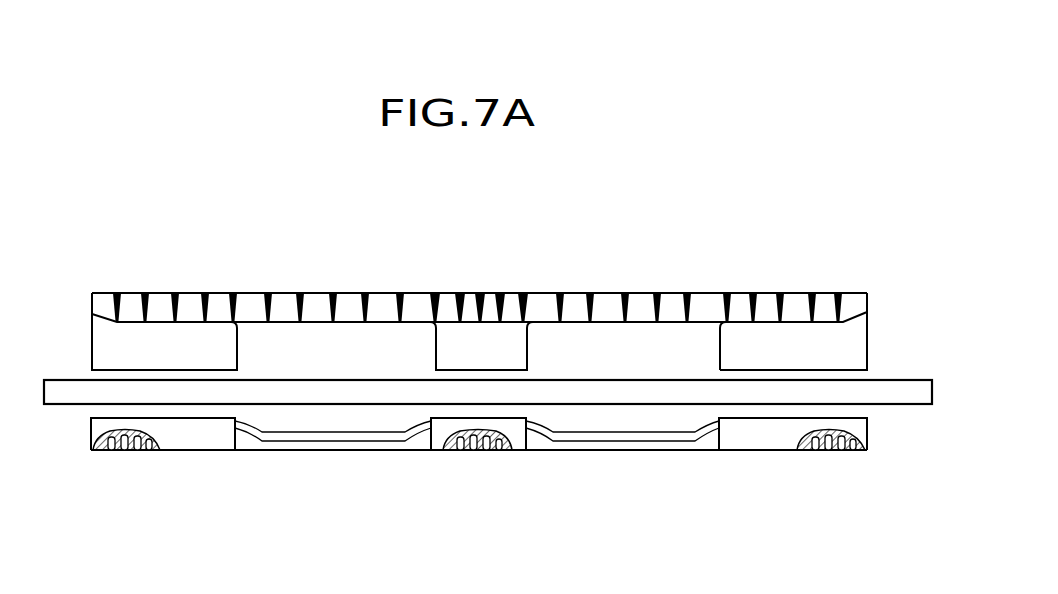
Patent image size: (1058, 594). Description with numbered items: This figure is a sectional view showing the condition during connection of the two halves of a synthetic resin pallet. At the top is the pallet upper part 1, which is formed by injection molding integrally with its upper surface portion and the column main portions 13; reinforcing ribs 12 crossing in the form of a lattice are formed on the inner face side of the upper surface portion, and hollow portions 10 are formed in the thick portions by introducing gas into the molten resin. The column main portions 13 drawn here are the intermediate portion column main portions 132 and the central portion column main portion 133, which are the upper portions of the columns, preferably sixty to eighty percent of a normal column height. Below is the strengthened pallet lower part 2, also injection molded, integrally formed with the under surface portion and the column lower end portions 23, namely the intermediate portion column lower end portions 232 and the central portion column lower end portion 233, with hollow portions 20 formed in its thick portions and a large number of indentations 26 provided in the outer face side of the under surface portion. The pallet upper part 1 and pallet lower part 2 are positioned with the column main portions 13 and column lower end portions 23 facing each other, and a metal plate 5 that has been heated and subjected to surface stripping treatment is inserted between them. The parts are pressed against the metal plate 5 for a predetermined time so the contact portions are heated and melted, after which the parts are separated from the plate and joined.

The pallet upper part 1 is at (497, 276).
The pallet lower part 2 is at (868, 450).
The metal plate 5 is at (58, 405).
The hollow portions 10 is at (523, 313).
The reinforcing ribs 12 is at (160, 309).
The column main portions 13 is at (512, 277).
The intermediate portion column main portions 132 is at (130, 347).
The central portion column main portion 133 is at (462, 343).
The hollow portions 20 is at (493, 508).
The column lower end portions 23 is at (479, 484).
The intermediate portion column lower end portions 232 is at (190, 433).
The central portion column lower end portion 233 is at (415, 452).
The indentations 26 is at (462, 452).